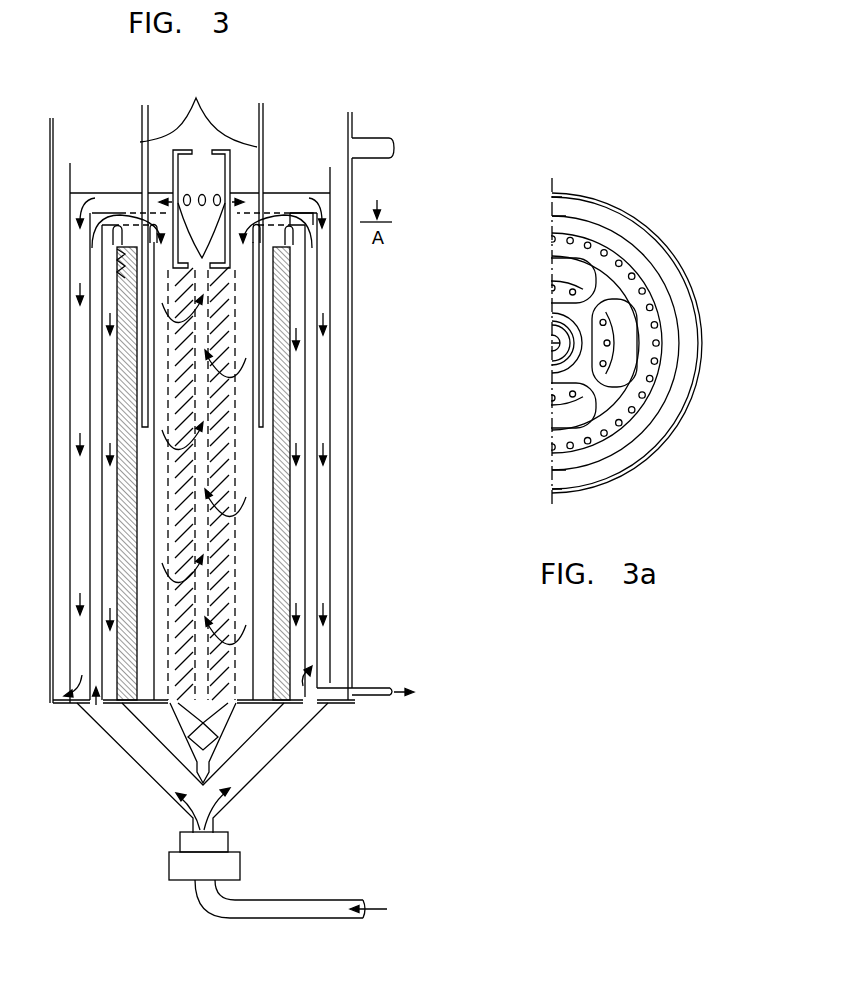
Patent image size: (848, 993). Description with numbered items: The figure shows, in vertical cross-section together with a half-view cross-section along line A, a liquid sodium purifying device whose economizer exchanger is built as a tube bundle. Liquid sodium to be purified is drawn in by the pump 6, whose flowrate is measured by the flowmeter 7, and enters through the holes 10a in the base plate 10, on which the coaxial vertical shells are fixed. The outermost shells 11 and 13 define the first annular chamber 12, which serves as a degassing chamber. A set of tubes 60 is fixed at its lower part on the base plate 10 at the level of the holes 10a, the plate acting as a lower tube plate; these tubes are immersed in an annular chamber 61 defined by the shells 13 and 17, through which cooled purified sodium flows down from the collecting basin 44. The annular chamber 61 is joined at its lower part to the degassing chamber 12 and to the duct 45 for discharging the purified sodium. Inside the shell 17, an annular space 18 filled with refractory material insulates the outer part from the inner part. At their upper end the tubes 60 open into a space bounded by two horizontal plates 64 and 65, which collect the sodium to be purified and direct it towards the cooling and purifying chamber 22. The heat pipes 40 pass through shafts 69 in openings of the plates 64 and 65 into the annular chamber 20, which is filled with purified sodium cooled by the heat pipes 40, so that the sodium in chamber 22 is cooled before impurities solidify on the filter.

In FIG. 3, the pump 6 is at (175, 866).
In FIG. 3, the flowmeter 7 is at (185, 842).
In FIG. 3, the base plate 10 is at (326, 682).
In FIG. 3, the holes in the base plate 10a is at (328, 703).
In FIG. 3, the shell 11 is at (350, 404).
In FIG. 3, the first annular chamber 12 is at (345, 348).
In FIG. 3, the shell 13 is at (338, 326).
In FIG. 3, the shell 17 is at (285, 560).
In FIG. 3, the annular space 18 is at (292, 540).
In FIG. 3, the first annular chamber of the inner part 20 is at (285, 705).
In FIG. 3, the cooling and purifying chamber 22 is at (265, 672).
In FIG. 3, the heat pipes 40 is at (198, 387).
In FIG. 3a, the heat pipes 40 is at (596, 372).
In FIG. 3, the collecting basin 44 is at (103, 192).
In FIG. 3, the duct 45 is at (370, 690).
In FIG. 3, the tubes 60 is at (312, 505).
In FIG. 3a, the tubes 60 is at (645, 290).
In FIG. 3, the annular chamber 61 is at (327, 478).
In FIG. 3, the horizontal plate 64 is at (299, 212).
In FIG. 3, the horizontal plate 65 is at (295, 212).
In FIG. 3a, the shafts 69 is at (620, 315).